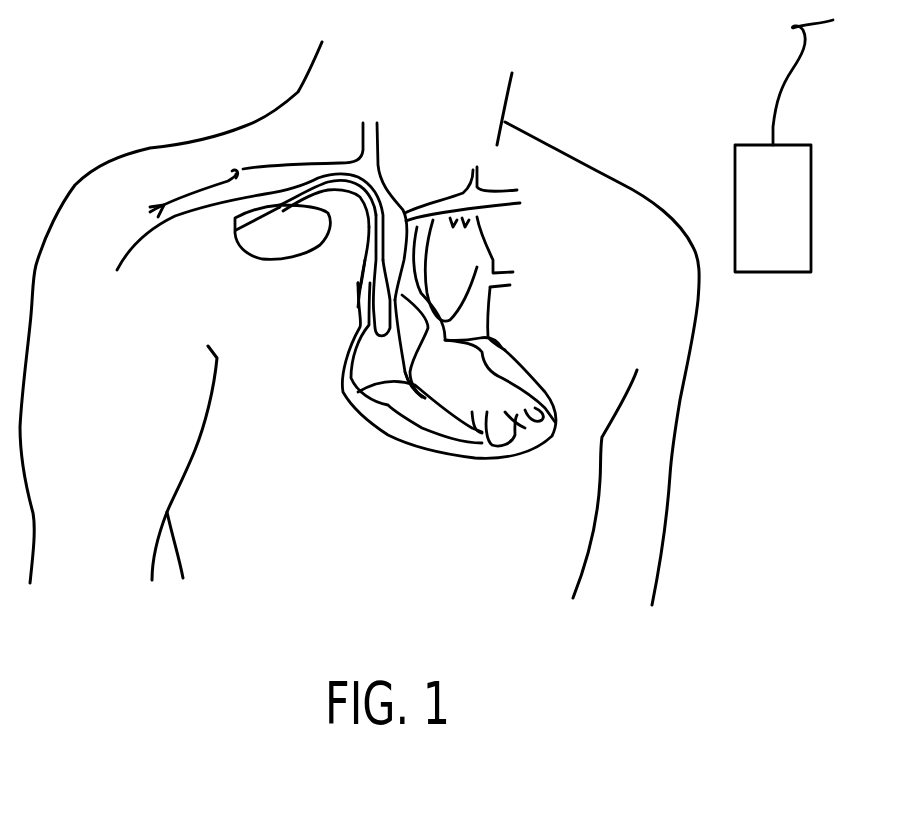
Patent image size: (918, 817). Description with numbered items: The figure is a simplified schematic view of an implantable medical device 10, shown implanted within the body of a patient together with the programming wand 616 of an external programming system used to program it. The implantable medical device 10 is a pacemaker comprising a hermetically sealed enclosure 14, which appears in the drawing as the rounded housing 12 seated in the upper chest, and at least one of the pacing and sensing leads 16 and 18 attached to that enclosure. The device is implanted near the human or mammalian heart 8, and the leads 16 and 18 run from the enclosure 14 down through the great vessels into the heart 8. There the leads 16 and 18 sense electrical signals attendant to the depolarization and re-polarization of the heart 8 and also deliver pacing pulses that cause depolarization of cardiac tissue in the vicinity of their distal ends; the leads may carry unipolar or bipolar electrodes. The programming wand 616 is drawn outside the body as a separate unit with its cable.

The heart 8 is at (527, 370).
The implantable medical device 10 is at (231, 283).
The implantable device housing 12 is at (238, 220).
The hermetically sealed enclosure 14 is at (297, 243).
The pacing and sensing lead 16 is at (370, 290).
The pacing and sensing lead 18 is at (358, 392).
The programming wand 616 is at (811, 173).